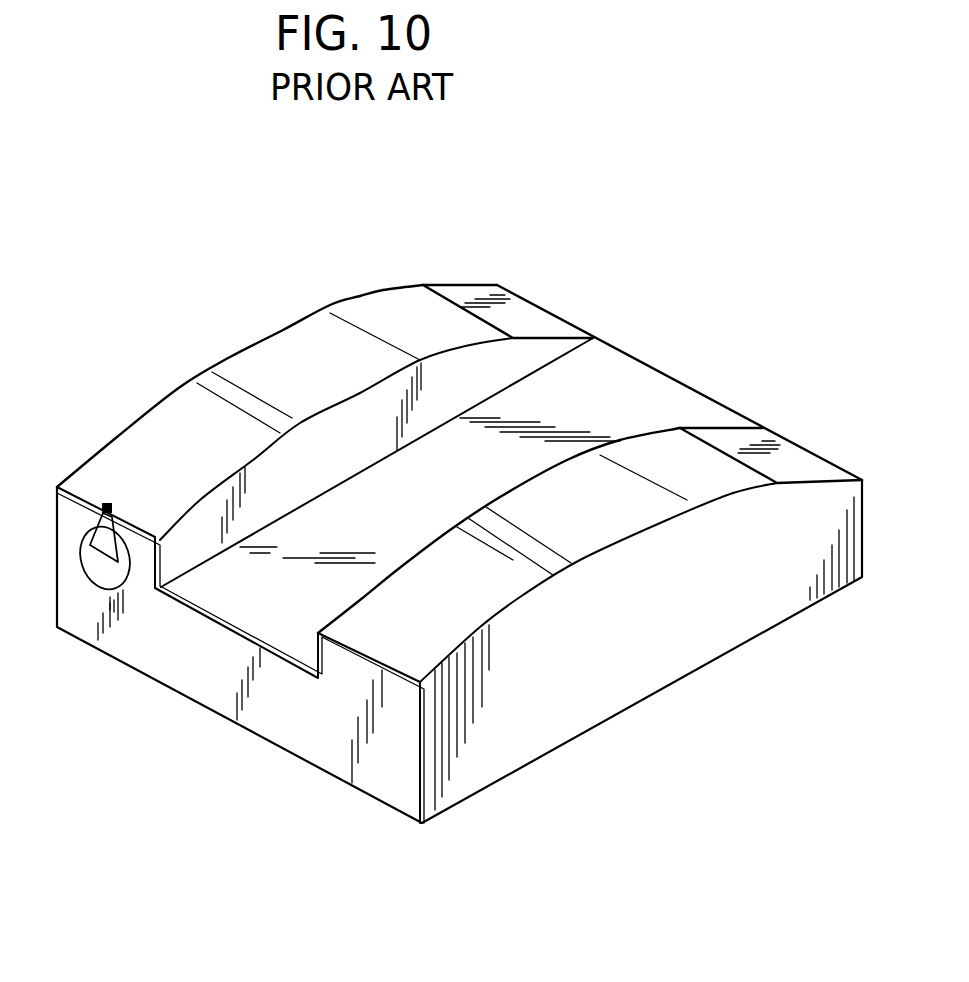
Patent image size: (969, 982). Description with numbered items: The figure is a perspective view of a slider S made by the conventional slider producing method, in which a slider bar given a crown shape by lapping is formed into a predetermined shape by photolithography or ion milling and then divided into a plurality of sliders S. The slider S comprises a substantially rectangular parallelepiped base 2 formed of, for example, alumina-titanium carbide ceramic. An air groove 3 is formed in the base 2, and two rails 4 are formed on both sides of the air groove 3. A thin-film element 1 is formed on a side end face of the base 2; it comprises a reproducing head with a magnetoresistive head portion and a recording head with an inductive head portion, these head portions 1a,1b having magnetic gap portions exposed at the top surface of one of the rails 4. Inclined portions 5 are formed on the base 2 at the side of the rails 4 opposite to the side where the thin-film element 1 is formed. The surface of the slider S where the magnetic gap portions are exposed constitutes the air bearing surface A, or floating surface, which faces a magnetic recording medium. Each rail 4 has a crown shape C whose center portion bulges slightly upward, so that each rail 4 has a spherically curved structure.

The thin-film element 1 is at (167, 650).
The MR head portion and inductive head portion 1a,1b is at (106, 492).
The base 2 is at (683, 673).
The air groove 3 is at (602, 383).
The rail 4 is at (194, 420).
The inclined portion 5 is at (520, 317).
The air-bearing surface direction A is at (388, 302).
The crown shape C is at (285, 340).
The slider S is at (701, 363).